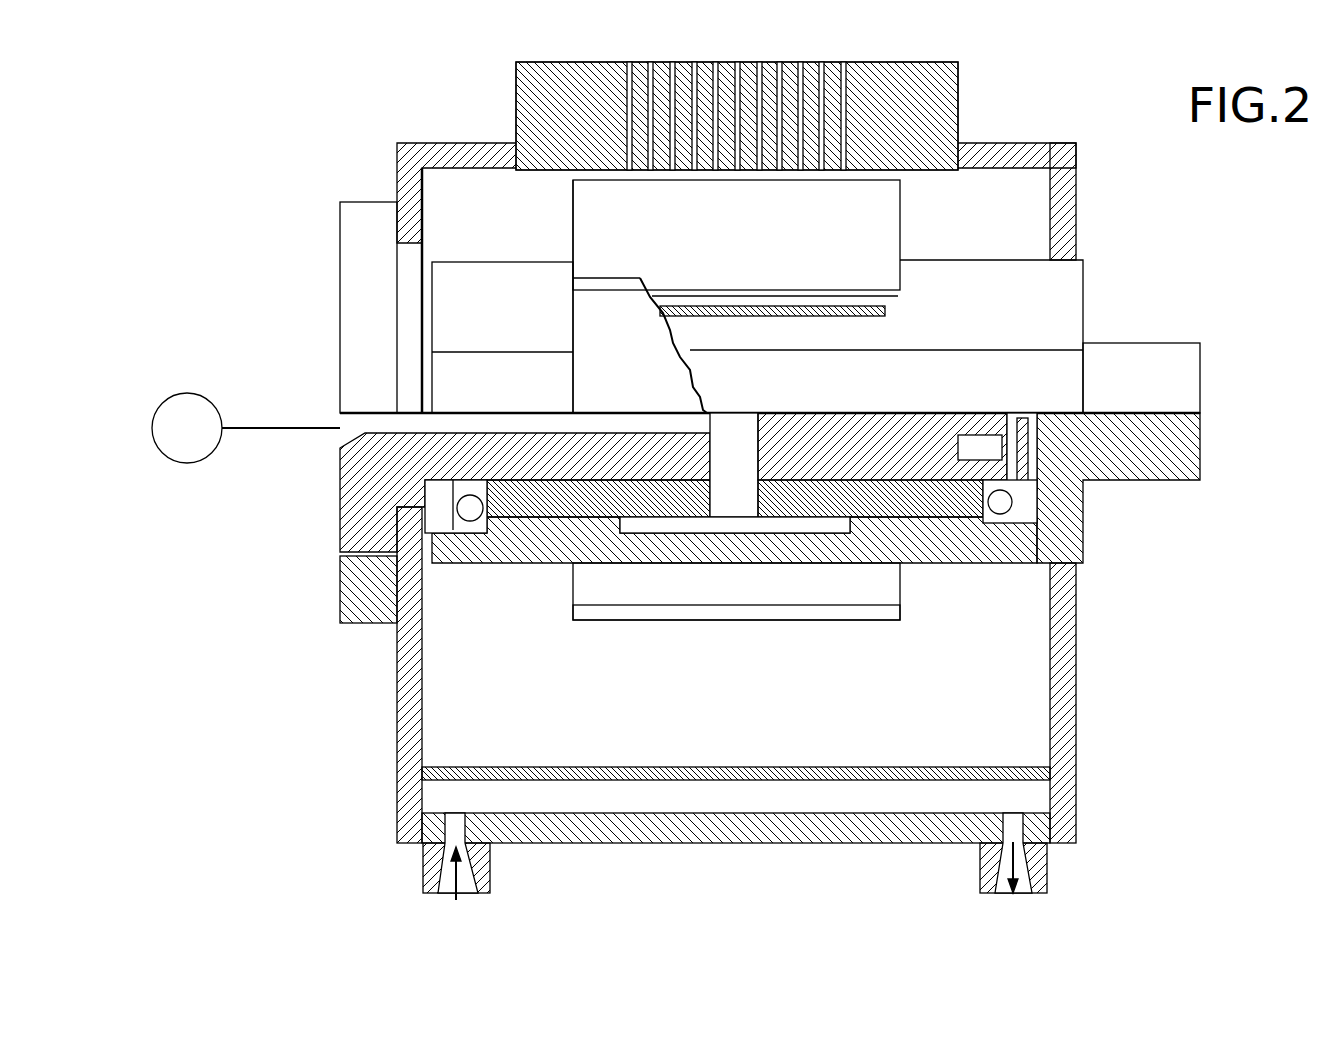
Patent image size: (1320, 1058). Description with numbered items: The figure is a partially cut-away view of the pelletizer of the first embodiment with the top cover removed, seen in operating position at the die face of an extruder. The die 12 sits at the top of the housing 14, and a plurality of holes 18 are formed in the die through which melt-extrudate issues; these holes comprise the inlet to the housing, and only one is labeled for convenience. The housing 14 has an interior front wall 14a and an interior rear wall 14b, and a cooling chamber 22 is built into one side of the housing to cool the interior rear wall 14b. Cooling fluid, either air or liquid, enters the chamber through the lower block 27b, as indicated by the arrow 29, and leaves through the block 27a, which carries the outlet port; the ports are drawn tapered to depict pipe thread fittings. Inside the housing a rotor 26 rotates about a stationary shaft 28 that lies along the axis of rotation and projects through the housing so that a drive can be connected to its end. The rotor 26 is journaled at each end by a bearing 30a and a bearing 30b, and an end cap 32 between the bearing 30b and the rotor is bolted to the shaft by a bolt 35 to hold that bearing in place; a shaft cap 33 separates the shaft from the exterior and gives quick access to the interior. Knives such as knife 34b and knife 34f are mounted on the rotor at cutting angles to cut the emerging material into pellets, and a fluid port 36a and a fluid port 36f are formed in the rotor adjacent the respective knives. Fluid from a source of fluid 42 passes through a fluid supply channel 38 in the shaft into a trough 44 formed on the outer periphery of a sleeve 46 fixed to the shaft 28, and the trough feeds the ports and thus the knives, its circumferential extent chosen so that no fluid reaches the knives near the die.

The die 12 is at (516, 68).
The holes 18 is at (843, 62).
The housing 14 is at (1016, 143).
The interior front wall 14a is at (1076, 150).
The interior rear wall 14b is at (1015, 770).
The cooling chamber 22 is at (730, 800).
The rotor 26 is at (470, 262).
The block 27a is at (980, 900).
The block 27b is at (480, 900).
The shaft 28 is at (342, 515).
The arrow 29 is at (445, 878).
The bearing 30a is at (466, 508).
The bearing 30b is at (1010, 503).
The end cap 32 is at (1013, 413).
The shaft cap 33 is at (342, 615).
The knife 34b is at (900, 222).
The knife 34f is at (875, 586).
The bolt 35 is at (983, 448).
The fluid port 36a is at (900, 307).
The fluid port 36f is at (850, 548).
The fluid supply channel 38 is at (725, 437).
The source of fluid 42 is at (187, 393).
The trough 44 is at (683, 518).
The sleeve 46 is at (507, 493).